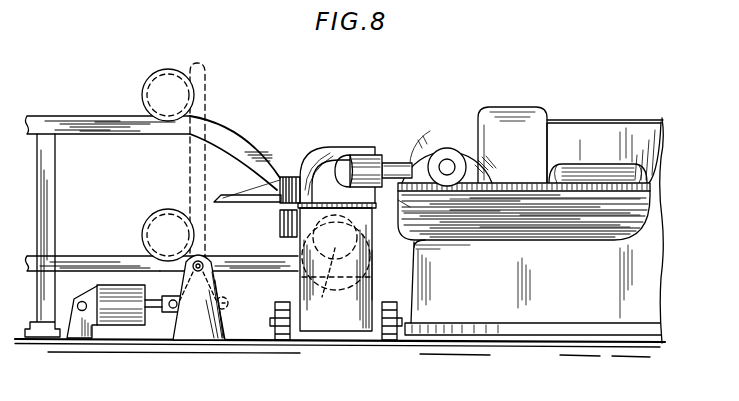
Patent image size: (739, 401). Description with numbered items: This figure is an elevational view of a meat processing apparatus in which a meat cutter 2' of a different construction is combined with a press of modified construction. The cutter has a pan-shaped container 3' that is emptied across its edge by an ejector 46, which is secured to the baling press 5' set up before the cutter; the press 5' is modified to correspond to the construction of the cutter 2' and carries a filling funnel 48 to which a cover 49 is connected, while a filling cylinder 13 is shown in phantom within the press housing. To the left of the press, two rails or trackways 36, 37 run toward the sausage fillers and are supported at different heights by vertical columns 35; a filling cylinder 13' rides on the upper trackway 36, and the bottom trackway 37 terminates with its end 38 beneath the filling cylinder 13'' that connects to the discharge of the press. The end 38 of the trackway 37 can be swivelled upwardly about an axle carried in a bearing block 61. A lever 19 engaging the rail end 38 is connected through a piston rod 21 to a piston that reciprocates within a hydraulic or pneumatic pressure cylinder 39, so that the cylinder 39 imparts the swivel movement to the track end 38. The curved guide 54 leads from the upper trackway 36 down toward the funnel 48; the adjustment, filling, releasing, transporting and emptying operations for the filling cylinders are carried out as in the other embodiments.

The meat cutter 2' is at (540, 225).
The pan-shaped container 3' is at (396, 222).
The baling press 5' is at (387, 275).
The filling cylinder 13 is at (336, 265).
The filling cylinder 13' is at (158, 92).
The filling cylinder 13'' is at (168, 224).
The lever 19 is at (176, 298).
The piston rod 21 is at (147, 309).
The vertical column 35 is at (55, 168).
The trackway 36 is at (80, 117).
The bottom trackway 37 is at (80, 258).
The trackway end 38 is at (244, 262).
The pressure cylinder 39 is at (118, 320).
The ejector 46 is at (430, 130).
The filling funnel 48 is at (330, 148).
The cover 49 is at (231, 197).
The curved chute 54 is at (262, 150).
The bearing block 61 is at (200, 335).